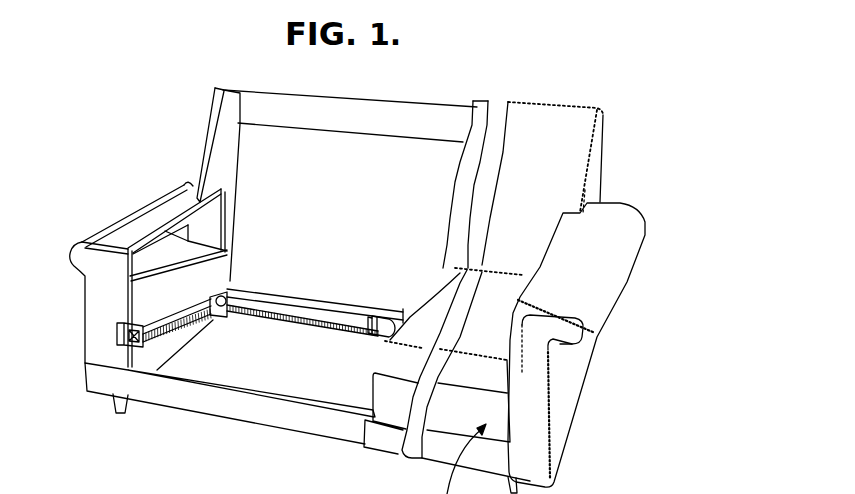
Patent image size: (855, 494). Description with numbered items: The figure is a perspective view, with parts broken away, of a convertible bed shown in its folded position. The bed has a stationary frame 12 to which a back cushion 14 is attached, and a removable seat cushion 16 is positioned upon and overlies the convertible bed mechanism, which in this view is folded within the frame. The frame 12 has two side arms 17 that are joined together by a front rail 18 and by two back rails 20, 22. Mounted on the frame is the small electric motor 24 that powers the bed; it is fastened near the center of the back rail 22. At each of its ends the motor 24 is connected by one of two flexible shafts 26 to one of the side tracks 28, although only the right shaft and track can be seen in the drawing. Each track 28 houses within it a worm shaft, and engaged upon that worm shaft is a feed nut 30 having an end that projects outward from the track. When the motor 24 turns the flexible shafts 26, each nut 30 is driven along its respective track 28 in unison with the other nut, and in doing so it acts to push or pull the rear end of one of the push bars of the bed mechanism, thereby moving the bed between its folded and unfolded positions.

The stationary frame 12 is at (125, 183).
The back cushion 14 is at (557, 112).
The removable seat cushion 16 is at (493, 325).
The side arms 17 is at (97, 298).
The front rail 18 is at (309, 427).
The back rail 20 is at (376, 129).
The back rail 22 is at (324, 308).
The small electric motor 24 is at (387, 320).
The flexible shafts 26 is at (343, 326).
The side tracks 28 is at (212, 317).
The feed nut 30 is at (216, 300).